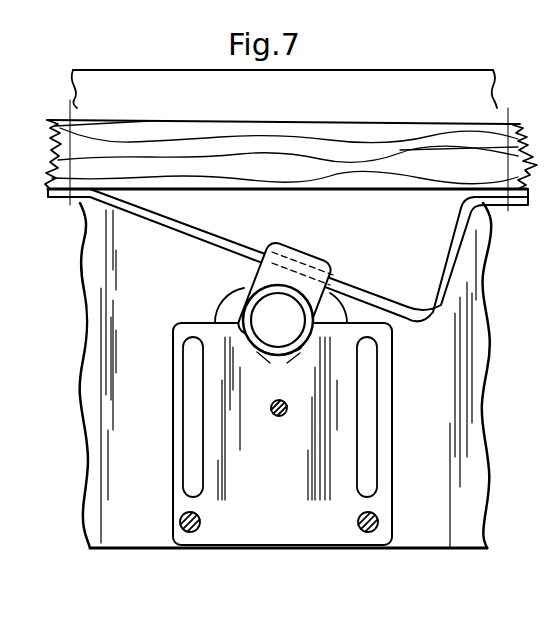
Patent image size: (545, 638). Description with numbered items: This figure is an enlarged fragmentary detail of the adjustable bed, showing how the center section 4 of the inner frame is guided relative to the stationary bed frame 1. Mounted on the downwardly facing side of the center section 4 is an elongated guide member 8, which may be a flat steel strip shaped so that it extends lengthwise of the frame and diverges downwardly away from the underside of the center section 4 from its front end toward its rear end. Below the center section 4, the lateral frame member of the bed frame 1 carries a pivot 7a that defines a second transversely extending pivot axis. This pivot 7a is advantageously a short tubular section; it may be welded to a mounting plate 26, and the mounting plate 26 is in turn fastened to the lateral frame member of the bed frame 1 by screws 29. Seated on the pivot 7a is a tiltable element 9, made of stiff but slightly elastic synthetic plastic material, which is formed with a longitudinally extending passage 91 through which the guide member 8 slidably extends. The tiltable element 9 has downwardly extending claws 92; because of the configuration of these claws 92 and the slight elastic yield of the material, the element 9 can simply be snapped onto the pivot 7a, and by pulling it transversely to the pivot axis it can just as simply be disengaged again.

The support or bed frame 1 is at (483, 97).
The center section 4 is at (410, 143).
The guide member 8 is at (452, 267).
The tiltable element 9 is at (260, 280).
The longitudinally extending passage 91 is at (313, 268).
The pivot 7a is at (250, 305).
The claw 92 is at (281, 343).
The mounting plate 26 is at (176, 400).
The screw 29 is at (180, 520).